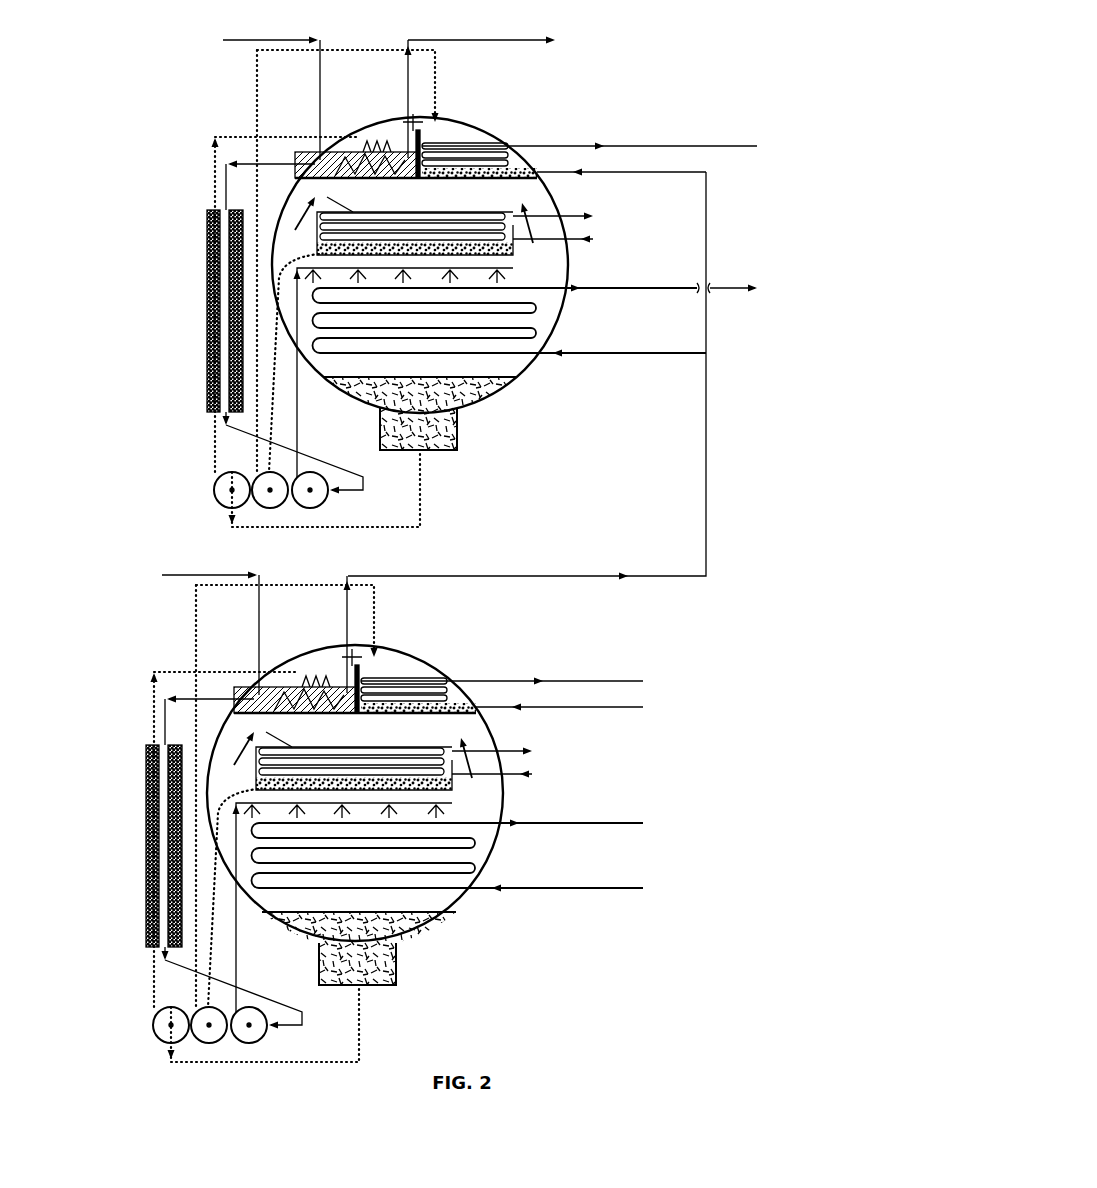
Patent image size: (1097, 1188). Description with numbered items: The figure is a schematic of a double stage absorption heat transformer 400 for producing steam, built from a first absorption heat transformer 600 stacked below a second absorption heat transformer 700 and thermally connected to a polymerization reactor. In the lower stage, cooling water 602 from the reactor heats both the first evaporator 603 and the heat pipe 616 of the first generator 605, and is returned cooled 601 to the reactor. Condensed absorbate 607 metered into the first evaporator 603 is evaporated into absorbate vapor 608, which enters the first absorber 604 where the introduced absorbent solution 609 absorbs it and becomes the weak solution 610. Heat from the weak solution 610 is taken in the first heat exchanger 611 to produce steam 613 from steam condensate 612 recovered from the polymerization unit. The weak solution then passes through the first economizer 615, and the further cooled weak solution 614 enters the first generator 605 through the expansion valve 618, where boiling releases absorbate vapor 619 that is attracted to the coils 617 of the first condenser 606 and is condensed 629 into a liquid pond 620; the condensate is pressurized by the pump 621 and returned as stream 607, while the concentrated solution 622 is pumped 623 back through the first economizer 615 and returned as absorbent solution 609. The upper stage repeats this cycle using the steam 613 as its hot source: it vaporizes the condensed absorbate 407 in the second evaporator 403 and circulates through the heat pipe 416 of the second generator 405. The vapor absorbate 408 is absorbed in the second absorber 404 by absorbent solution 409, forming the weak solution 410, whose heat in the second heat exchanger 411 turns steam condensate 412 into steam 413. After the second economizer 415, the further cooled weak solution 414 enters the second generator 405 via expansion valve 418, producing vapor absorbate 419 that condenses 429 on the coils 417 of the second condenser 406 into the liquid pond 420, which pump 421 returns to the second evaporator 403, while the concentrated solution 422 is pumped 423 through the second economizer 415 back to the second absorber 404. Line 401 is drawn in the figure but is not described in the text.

The double stage absorption heat transformer 400 is at (716, 572).
The steam/product gas line 401 is at (565, 147).
The second evaporator 403 is at (472, 135).
The second absorber 404 is at (378, 127).
The second generator 405 is at (463, 343).
The second condenser 406 is at (412, 226).
The condensed absorbate 407 is at (352, 50).
The vapor absorbate 408 is at (428, 128).
The absorbent solution 409 is at (272, 133).
The weak solution 410 is at (313, 156).
The second heat exchanger 411 is at (393, 135).
The steam condensate 412 is at (256, 38).
The steam 413 is at (460, 38).
The further cooled weak solution 414 is at (505, 275).
The second economizer 415 is at (207, 313).
The heat pipe 416 is at (546, 330).
The coils 417 is at (462, 213).
The expansion valve 418 is at (322, 497).
The vapor absorbate 419 is at (306, 202).
The liquid pond 420 is at (513, 252).
The pump 421 is at (270, 508).
The concentrated solution 422 is at (488, 398).
The pump 423 is at (218, 490).
The condensed absorbate 429 is at (349, 195).
The first absorption heat transformer 600 is at (531, 607).
The cooled cooling water 601 is at (502, 757).
The cooling water 602 is at (559, 786).
The first evaporator 603 is at (355, 780).
The first absorber 604 is at (355, 655).
The first generator 605 is at (393, 931).
The first condenser 606 is at (351, 761).
The condensed absorbate 607 is at (287, 621).
The absorbate vapor 608 is at (387, 695).
The absorbent solution 609 is at (263, 796).
The weak solution 610 is at (225, 823).
The first heat exchanger 611 is at (338, 652).
The steam condensate 612 is at (209, 617).
The steam 613 is at (625, 172).
The further cooled weak solution 614 is at (360, 912).
The first economizer 615 is at (135, 829).
The heat pipe 616 is at (448, 856).
The coils 617 is at (354, 752).
The expansion valve 618 is at (277, 1030).
The absorbate vapor 619 is at (349, 737).
The liquid pond 620 is at (397, 893).
The pump 621 is at (187, 1050).
The concentrated solution 622 is at (323, 997).
The pump 623 is at (146, 1034).
The condensed absorbate 629 is at (288, 730).
The second absorption heat transformer 700 is at (555, 100).